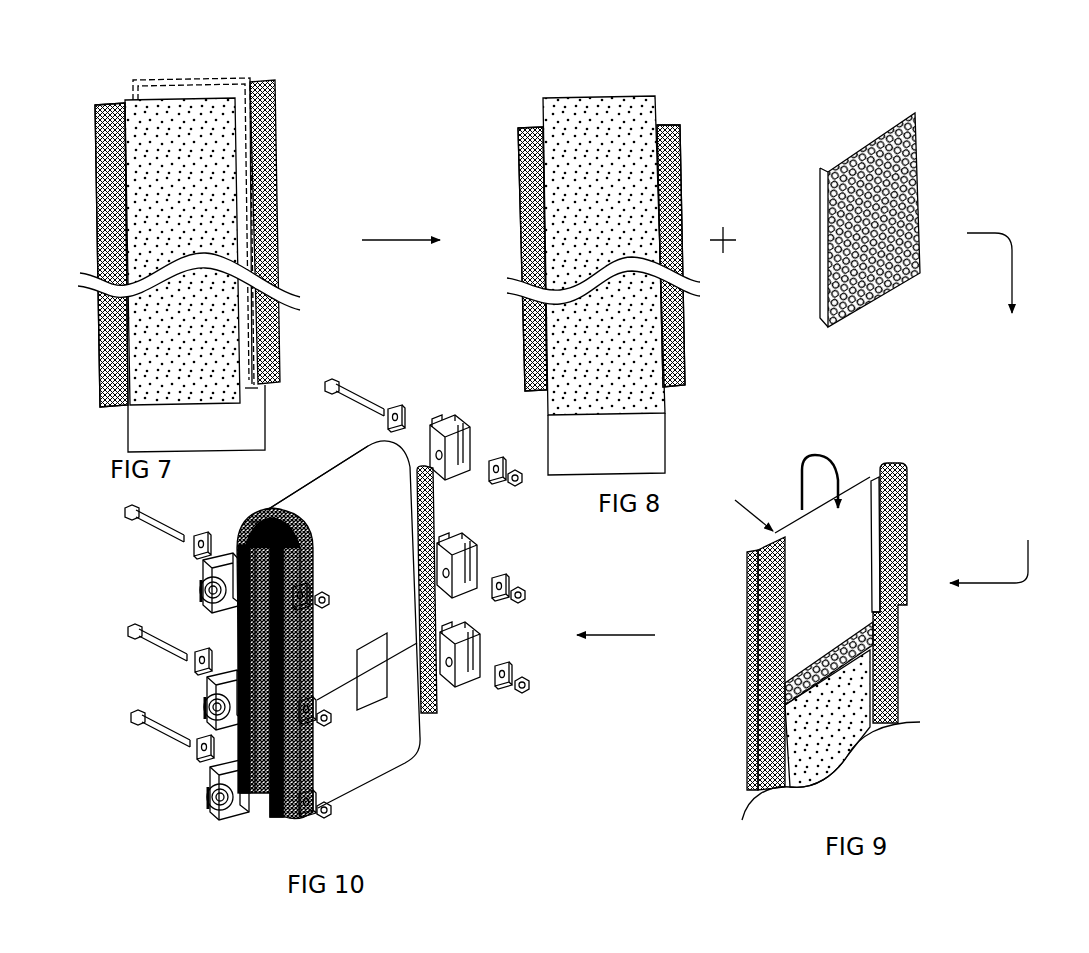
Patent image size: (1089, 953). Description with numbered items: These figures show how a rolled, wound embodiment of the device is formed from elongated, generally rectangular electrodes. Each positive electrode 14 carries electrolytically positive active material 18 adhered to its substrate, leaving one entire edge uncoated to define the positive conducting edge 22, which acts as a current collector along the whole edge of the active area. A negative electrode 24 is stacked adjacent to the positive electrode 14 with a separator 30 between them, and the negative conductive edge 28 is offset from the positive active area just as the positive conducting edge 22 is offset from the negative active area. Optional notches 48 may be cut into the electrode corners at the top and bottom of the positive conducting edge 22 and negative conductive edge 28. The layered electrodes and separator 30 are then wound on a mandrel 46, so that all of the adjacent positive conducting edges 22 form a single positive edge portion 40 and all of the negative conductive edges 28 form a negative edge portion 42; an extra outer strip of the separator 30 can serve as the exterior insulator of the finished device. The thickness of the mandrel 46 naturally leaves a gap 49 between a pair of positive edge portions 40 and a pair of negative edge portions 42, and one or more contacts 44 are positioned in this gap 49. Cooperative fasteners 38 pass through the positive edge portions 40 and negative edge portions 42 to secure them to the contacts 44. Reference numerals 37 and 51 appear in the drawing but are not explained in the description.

In FIG. 7, the positive electrode 14 is at (92, 170).
In FIG. 8, the positive electrode 14 is at (515, 200).
In FIG. 9, the positive electrode 14 is at (750, 680).
In FIG. 7, the electrolytically positive active material 18 is at (142, 118).
In FIG. 8, the electrolytically positive active material 18 is at (598, 110).
In FIG. 9, the electrolytically positive active material 18 is at (846, 746).
In FIG. 7, the positive conducting edge 22 is at (98, 128).
In FIG. 8, the positive conducting edge 22 is at (520, 128).
In FIG. 9, the positive conducting edge 22 is at (752, 578).
In FIG. 7, the negative electrode 24 is at (280, 120).
In FIG. 8, the negative electrode 24 is at (688, 195).
In FIG. 9, the negative electrode 24 is at (905, 637).
In FIG. 7, the negative conductive edge 28 is at (276, 85).
In FIG. 9, the negative conductive edge 28 is at (905, 488).
In FIG. 7, the separator 30 is at (186, 80).
In FIG. 9, the separator 30 is at (862, 500).
In FIG. 10, the separator 30 is at (333, 490).
In FIG. 10, the fastening bolt 37 is at (243, 643).
In FIG. 10, the cooperative fasteners 38 is at (165, 540).
In FIG. 10, the positive edge portion 40 is at (318, 772).
In FIG. 10, the negative edge portion 42 is at (440, 502).
In FIG. 10, the contacts 44 is at (200, 704).
In FIG. 8, the mandrel 46 is at (820, 312).
In FIG. 9, the mandrel 46 is at (829, 663).
In FIG. 8, the notches 48 is at (662, 125).
In FIG. 10, the notches 48 is at (245, 520).
In FIG. 10, the gap 49 is at (268, 808).
In FIG. 10, the housing plate 51 is at (343, 624).